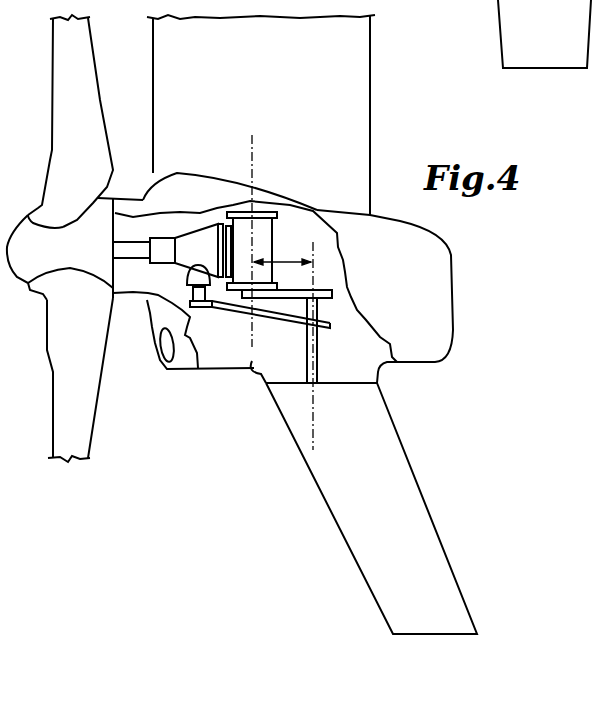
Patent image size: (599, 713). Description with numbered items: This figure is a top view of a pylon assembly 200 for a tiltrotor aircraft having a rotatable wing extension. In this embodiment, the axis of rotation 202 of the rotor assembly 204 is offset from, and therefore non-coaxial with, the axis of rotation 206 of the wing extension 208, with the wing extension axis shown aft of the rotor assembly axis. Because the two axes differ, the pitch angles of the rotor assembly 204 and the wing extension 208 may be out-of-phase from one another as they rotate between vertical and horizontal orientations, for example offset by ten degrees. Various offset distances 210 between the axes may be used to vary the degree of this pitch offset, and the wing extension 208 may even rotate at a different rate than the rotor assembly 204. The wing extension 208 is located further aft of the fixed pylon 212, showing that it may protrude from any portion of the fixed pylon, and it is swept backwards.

The pylon assembly 200 is at (398, 153).
The axis of rotation 202 is at (253, 158).
The rotor assembly 204 is at (134, 199).
The axis of rotation 206 is at (313, 430).
The wing extension 208 is at (430, 550).
The offset distance 210 is at (286, 258).
The fixed pylon 212 is at (445, 285).